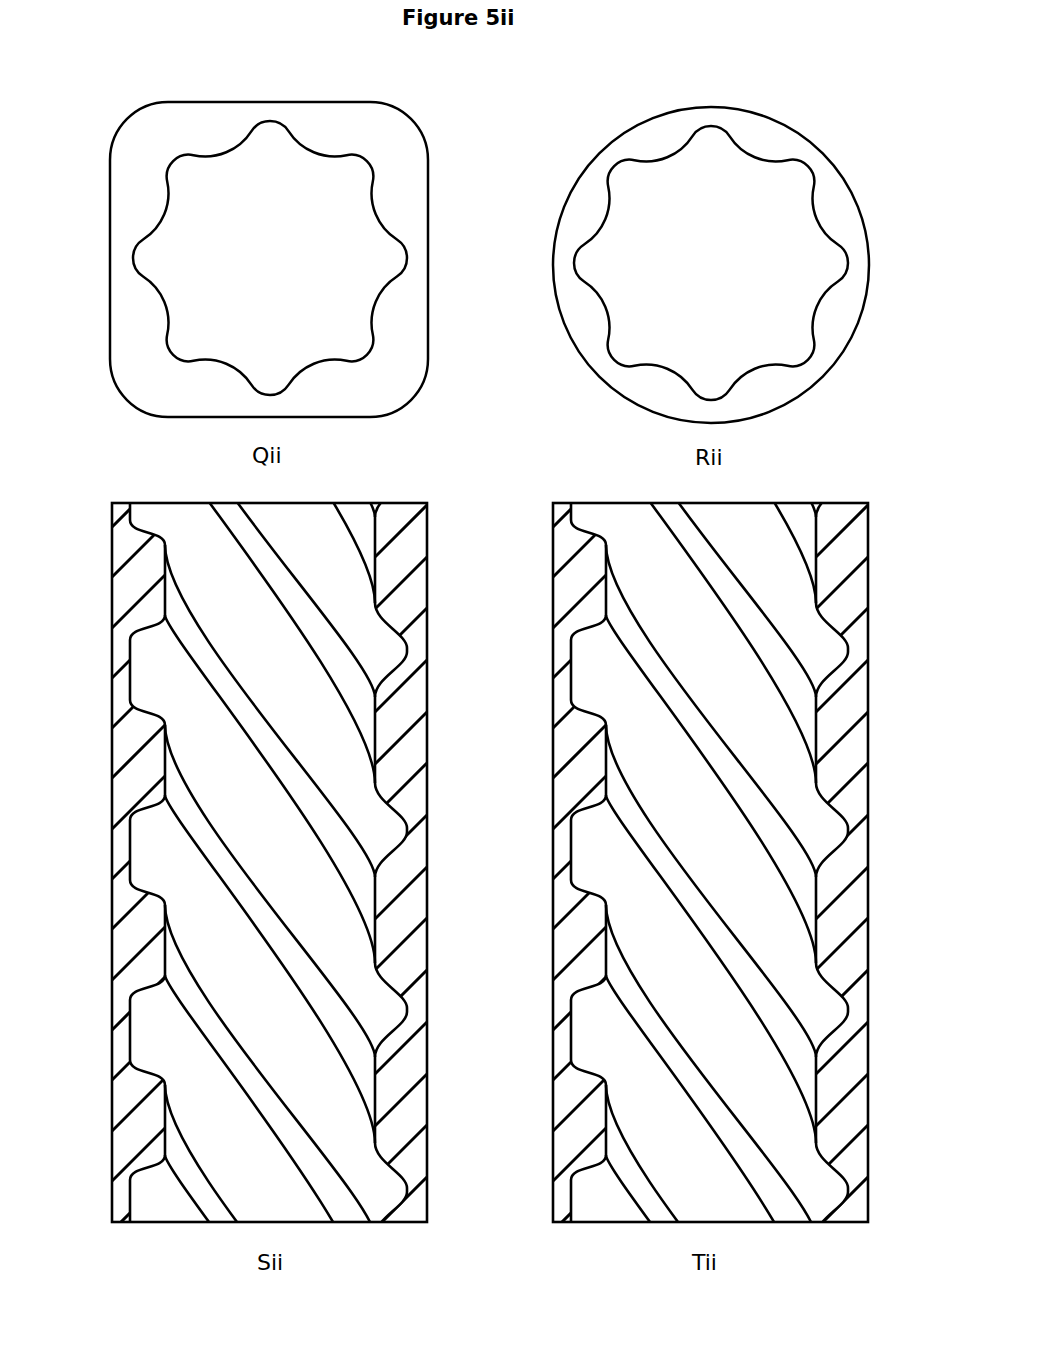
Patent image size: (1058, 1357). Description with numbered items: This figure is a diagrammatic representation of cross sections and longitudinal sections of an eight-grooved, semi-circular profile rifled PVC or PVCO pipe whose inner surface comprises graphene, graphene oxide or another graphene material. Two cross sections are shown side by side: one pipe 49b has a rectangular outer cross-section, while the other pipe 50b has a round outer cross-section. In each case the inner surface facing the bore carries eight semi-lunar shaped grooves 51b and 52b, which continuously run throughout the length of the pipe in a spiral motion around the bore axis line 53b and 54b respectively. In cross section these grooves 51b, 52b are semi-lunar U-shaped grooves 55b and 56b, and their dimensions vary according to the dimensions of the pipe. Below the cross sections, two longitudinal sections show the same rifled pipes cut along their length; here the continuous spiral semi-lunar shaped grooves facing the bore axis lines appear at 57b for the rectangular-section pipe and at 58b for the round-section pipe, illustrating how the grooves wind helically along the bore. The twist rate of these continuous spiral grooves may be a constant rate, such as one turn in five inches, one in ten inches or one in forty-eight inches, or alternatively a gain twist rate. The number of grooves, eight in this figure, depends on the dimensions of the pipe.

The rounded-square outer body 49b is at (124, 124).
The circular outer body 50b is at (625, 121).
The semi-lunar shaped grooves 51b is at (187, 347).
The semi-lunar shaped grooves 52b is at (638, 346).
The bore axis line 53b is at (284, 269).
The bore axis line 54b is at (733, 265).
The semi-lunar U-shaped groove 55b is at (368, 369).
The semi-lunar U-shaped groove 56b is at (818, 373).
The continuous spiral semi-lunar shaped grooves 57b is at (401, 1179).
The continuous spiral semi-lunar shaped grooves 58b is at (842, 1179).